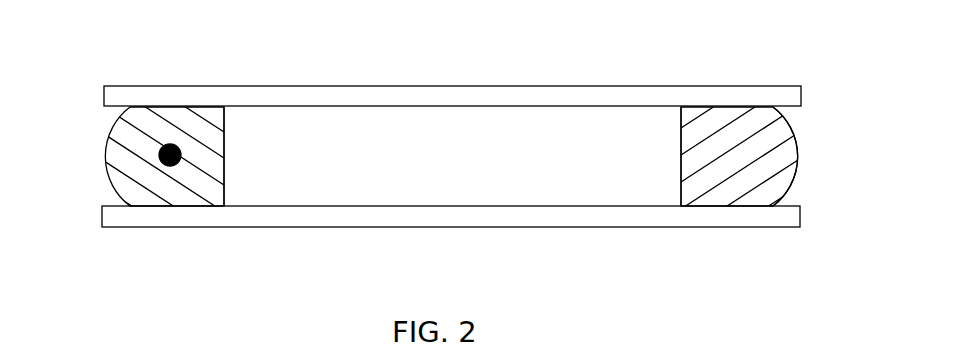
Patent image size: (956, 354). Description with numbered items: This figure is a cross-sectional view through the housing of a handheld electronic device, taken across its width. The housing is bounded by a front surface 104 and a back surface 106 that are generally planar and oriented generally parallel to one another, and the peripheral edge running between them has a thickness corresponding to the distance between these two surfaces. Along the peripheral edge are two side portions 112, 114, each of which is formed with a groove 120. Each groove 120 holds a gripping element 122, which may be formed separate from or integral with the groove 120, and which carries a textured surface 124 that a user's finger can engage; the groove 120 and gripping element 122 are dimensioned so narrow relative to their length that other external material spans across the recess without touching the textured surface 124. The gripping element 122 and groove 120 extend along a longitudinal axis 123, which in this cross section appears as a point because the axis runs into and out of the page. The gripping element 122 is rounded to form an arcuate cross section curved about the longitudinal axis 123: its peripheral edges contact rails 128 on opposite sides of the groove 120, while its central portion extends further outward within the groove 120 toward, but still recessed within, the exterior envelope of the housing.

The front surface 104 is at (432, 227).
The back surface 106 is at (436, 85).
The side portion 112 is at (78, 96).
The side portion 114 is at (832, 96).
The groove 120 is at (225, 172).
The gripping element 122 is at (120, 157).
The longitudinal axis 123 is at (173, 144).
The textured surface 124 is at (792, 180).
The rail 128 is at (142, 98).